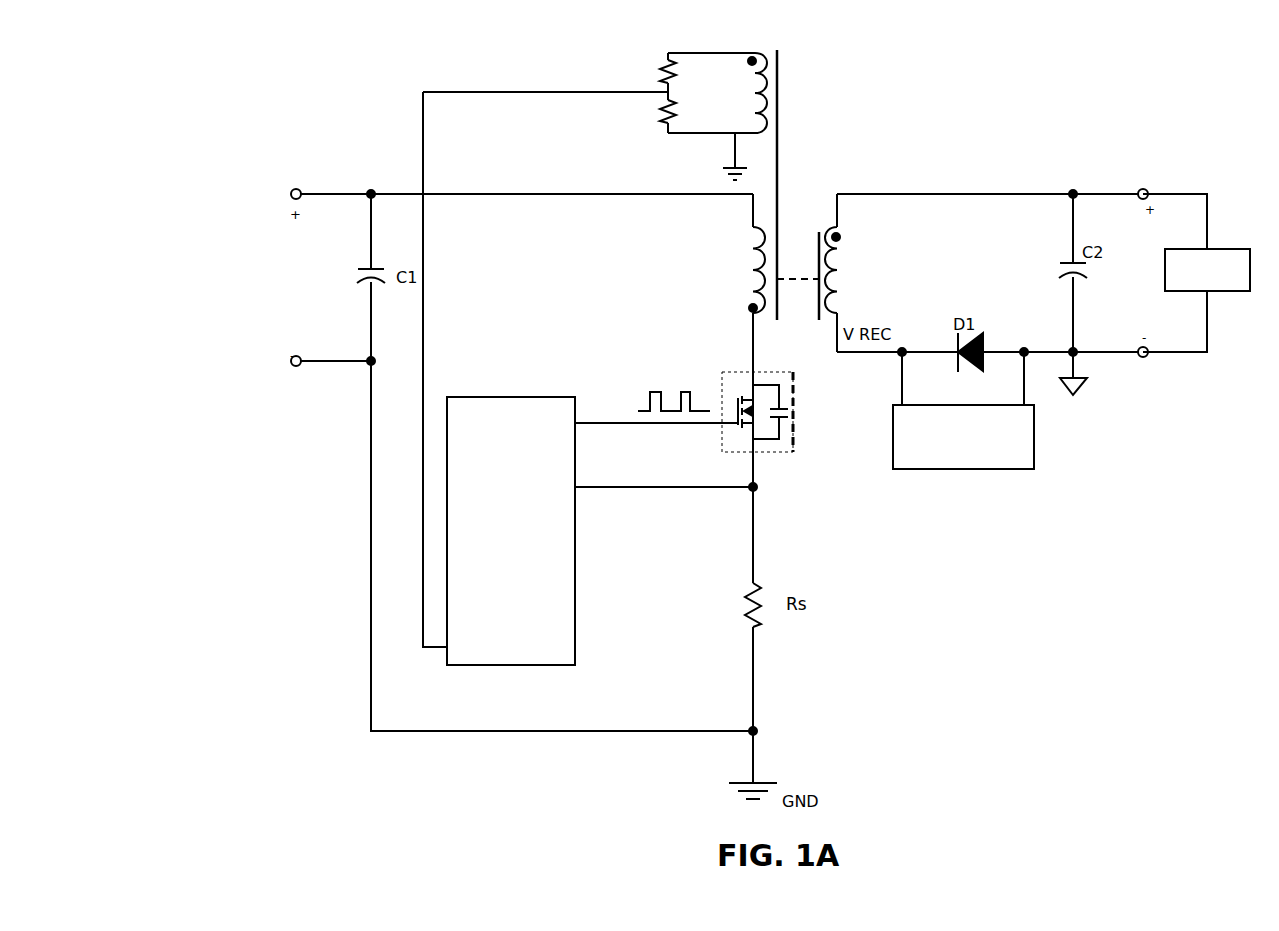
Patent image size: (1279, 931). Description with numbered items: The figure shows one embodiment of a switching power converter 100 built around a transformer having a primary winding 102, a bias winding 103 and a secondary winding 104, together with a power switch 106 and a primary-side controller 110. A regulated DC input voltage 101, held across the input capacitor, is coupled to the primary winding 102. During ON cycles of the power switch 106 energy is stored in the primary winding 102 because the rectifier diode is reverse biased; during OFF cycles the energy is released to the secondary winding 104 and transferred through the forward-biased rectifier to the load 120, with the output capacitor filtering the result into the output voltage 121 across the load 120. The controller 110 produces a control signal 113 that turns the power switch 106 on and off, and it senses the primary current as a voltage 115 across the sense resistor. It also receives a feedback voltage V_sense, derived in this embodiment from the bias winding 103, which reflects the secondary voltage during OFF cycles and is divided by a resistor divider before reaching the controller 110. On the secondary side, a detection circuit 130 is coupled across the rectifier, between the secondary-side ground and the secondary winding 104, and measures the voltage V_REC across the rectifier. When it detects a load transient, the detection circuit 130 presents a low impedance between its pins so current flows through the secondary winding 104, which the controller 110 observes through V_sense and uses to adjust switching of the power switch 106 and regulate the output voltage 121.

The switching power converter 100 is at (280, 112).
The input voltage 101 is at (310, 277).
The primary winding 102 is at (738, 262).
The bias winding 103 is at (780, 84).
The secondary winding 104 is at (848, 277).
The power switch 106 is at (793, 452).
The controller 110 is at (511, 507).
The control signal 113 is at (633, 418).
The voltage across sense resistor 115 is at (612, 487).
The load 120 is at (1199, 273).
The output voltage 121 is at (1162, 175).
The detection circuit 130 is at (970, 477).